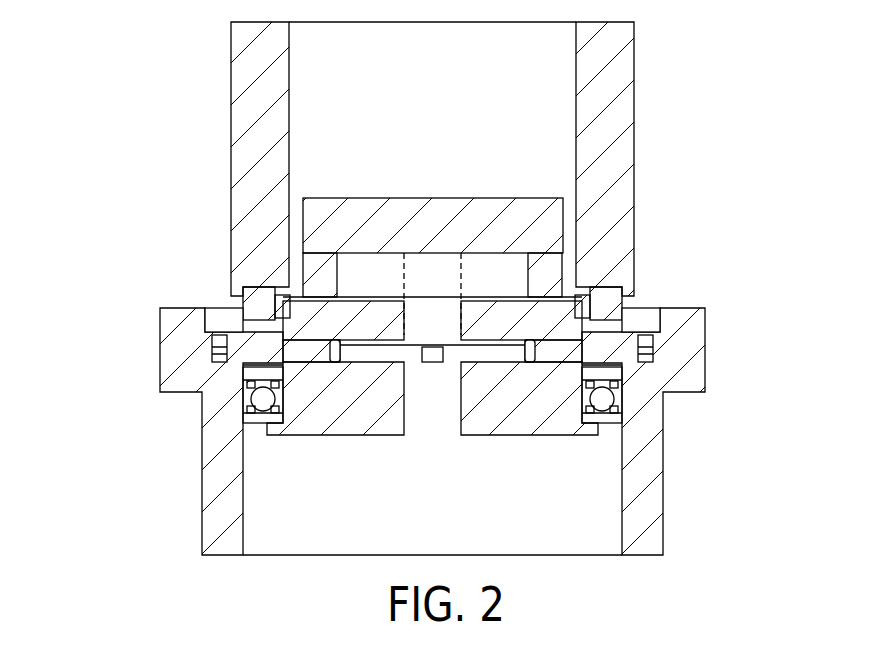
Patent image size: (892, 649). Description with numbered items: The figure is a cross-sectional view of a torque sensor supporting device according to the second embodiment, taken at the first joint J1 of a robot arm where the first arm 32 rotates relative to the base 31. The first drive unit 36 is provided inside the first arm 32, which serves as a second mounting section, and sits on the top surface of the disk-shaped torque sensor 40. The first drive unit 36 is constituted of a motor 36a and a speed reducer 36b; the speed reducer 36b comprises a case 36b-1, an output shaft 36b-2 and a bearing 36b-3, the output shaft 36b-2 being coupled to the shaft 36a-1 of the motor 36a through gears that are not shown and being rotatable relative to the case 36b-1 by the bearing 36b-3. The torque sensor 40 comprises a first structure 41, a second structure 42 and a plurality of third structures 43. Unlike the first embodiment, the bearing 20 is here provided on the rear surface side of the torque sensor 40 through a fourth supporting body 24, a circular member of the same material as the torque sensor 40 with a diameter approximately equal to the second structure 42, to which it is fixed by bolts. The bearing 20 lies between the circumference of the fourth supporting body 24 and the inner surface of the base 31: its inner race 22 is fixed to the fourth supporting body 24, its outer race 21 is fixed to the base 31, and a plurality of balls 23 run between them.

The first joint J1 is at (162, 259).
The bearing 20 is at (525, 396).
The outer race 21 is at (607, 412).
The inner race 22 is at (626, 374).
The balls 23 is at (609, 398).
The fourth supporting body 24 is at (302, 437).
The base 31 is at (665, 522).
The first arm 32 is at (636, 99).
The first drive unit 36 is at (460, 316).
The motor 36a is at (509, 239).
The shaft 36a-1 is at (422, 272).
The speed reducer 36b is at (439, 346).
The case 36b-1 is at (256, 290).
The output shaft 36b-2 is at (507, 325).
The bearing 36b-3 is at (297, 338).
The torque sensor 40 is at (357, 396).
The first structure 41 is at (211, 352).
The second structure 42 is at (248, 371).
The third structures 43 is at (213, 360).